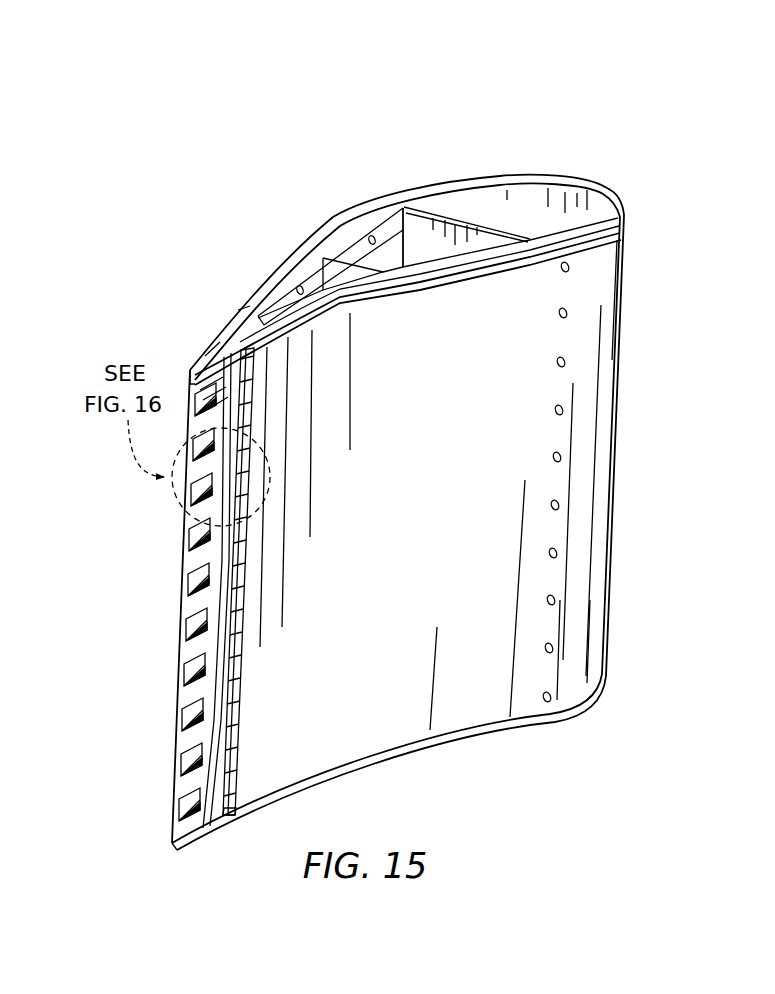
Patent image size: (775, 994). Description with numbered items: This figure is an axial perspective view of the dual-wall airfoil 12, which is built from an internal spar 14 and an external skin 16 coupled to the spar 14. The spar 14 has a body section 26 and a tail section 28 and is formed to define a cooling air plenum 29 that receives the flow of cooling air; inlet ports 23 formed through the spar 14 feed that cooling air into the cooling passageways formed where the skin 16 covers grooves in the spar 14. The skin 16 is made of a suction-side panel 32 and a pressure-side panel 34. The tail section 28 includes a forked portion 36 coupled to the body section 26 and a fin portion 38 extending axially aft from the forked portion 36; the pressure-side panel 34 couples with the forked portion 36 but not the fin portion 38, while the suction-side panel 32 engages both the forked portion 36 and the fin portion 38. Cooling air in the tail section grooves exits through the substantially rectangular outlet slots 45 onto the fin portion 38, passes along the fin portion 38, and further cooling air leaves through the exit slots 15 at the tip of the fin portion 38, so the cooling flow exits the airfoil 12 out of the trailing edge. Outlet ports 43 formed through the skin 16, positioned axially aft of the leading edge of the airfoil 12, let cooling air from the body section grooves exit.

The airfoil 12 is at (688, 178).
The spar 14 is at (469, 176).
The exit slot 15 is at (193, 397).
The skin 16 is at (631, 262).
The inlet ports 23 is at (373, 224).
The body section 26 is at (406, 186).
The tail section 28 is at (238, 306).
The cooling air plenum 29 is at (390, 224).
The suction-side panel 32 is at (297, 242).
The pressure-side panel 34 is at (455, 710).
The forked portion 36 is at (250, 302).
The fin portion 38 is at (213, 340).
The outlet ports 43 is at (558, 701).
The outlet slots 45 is at (219, 757).